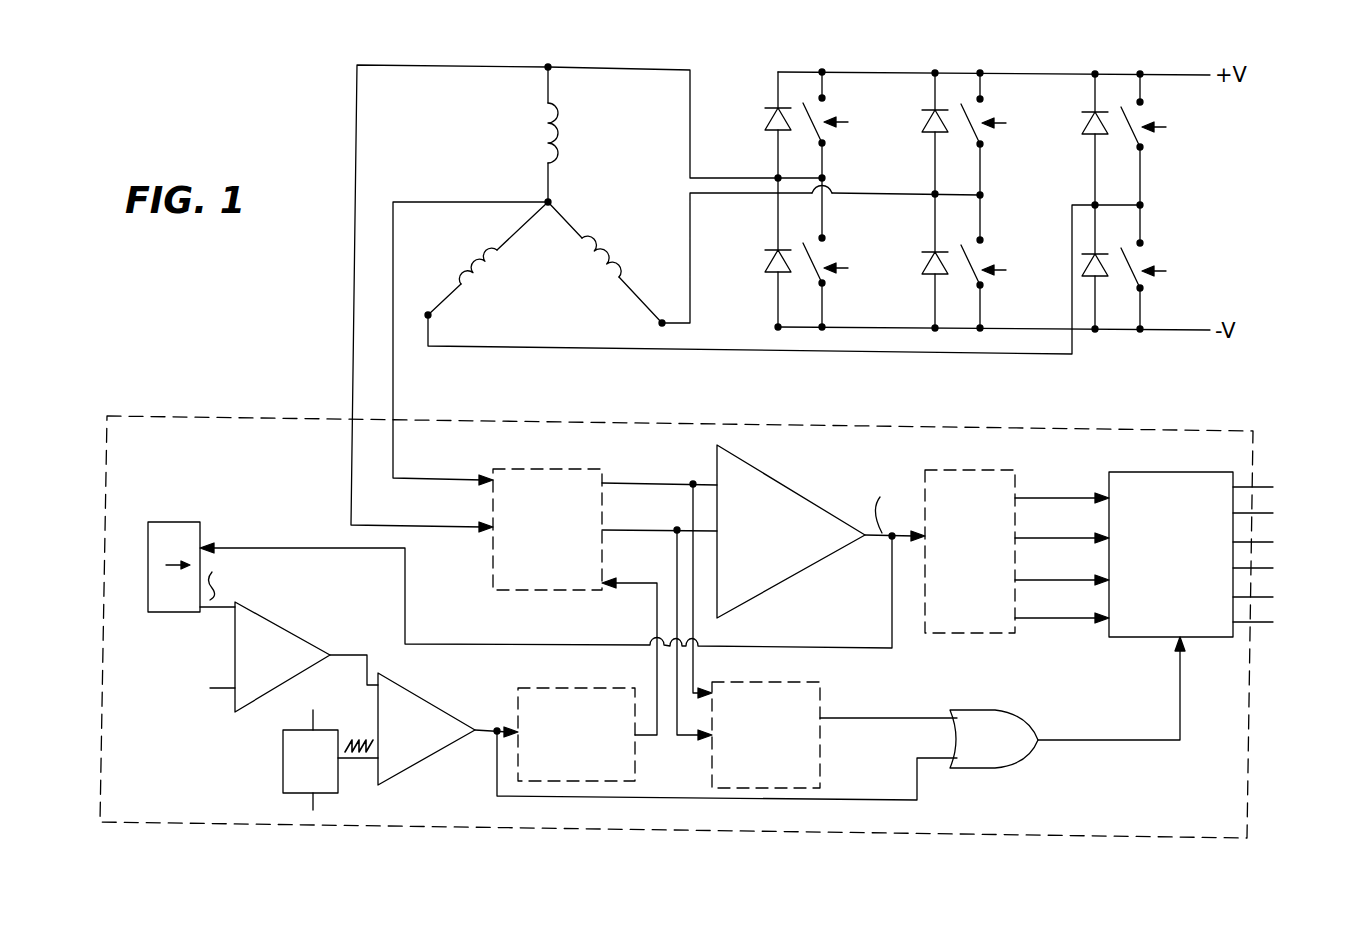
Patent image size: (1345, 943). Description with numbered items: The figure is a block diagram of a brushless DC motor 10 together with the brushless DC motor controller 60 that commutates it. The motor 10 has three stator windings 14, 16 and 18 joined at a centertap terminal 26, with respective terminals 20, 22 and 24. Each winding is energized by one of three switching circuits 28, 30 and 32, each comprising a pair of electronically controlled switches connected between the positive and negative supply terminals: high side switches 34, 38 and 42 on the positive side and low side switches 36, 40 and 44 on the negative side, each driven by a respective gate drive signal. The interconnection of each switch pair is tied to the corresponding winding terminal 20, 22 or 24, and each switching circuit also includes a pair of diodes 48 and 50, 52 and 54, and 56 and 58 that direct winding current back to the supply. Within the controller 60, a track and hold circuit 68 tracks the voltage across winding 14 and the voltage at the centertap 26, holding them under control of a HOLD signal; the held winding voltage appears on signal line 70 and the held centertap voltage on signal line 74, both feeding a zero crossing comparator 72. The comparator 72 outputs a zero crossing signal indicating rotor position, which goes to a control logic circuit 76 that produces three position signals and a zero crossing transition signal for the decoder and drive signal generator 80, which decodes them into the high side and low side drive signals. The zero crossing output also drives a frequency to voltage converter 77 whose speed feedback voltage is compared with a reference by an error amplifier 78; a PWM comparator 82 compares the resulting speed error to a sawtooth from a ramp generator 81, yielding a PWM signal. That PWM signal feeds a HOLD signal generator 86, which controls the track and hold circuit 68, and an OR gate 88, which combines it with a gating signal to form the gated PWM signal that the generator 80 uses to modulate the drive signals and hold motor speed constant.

The brushless DC motor 10 is at (642, 60).
The winding 14 is at (558, 111).
The winding 16 is at (598, 232).
The winding 18 is at (505, 256).
The terminal 20 is at (548, 64).
The terminal 22 is at (660, 323).
The terminal 24 is at (432, 316).
The centertap terminal 26 is at (546, 200).
The switching circuit 28 is at (795, 54).
The switching circuit 30 is at (953, 54).
The switching circuit 32 is at (1127, 56).
The high side switch 34 is at (823, 110).
The low side switch 36 is at (823, 252).
The high side switch 38 is at (981, 111).
The low side switch 40 is at (981, 254).
The high side switch 42 is at (1141, 114).
The low side switch 44 is at (1141, 256).
The diode 48 is at (777, 121).
The diode 50 is at (777, 263).
The diode 52 is at (933, 126).
The diode 54 is at (933, 264).
The diode 56 is at (1093, 128).
The diode 58 is at (1093, 266).
The brushless DC motor controller 60 is at (1068, 428).
The track and hold circuit 68 is at (493, 586).
The signal line 70 is at (644, 484).
The zero crossing comparator 72 is at (770, 471).
The signal line 74 is at (642, 530).
The control logic circuit 76 is at (955, 470).
The frequency to voltage converter 77 is at (160, 522).
The error amplifier 78 is at (271, 619).
The decoder and drive signal generator 80 is at (1160, 472).
The ramp generator 81 is at (283, 776).
The PWM comparator 82 is at (428, 762).
The HOLD signal generator 86 is at (574, 688).
The OR gate 88 is at (995, 710).